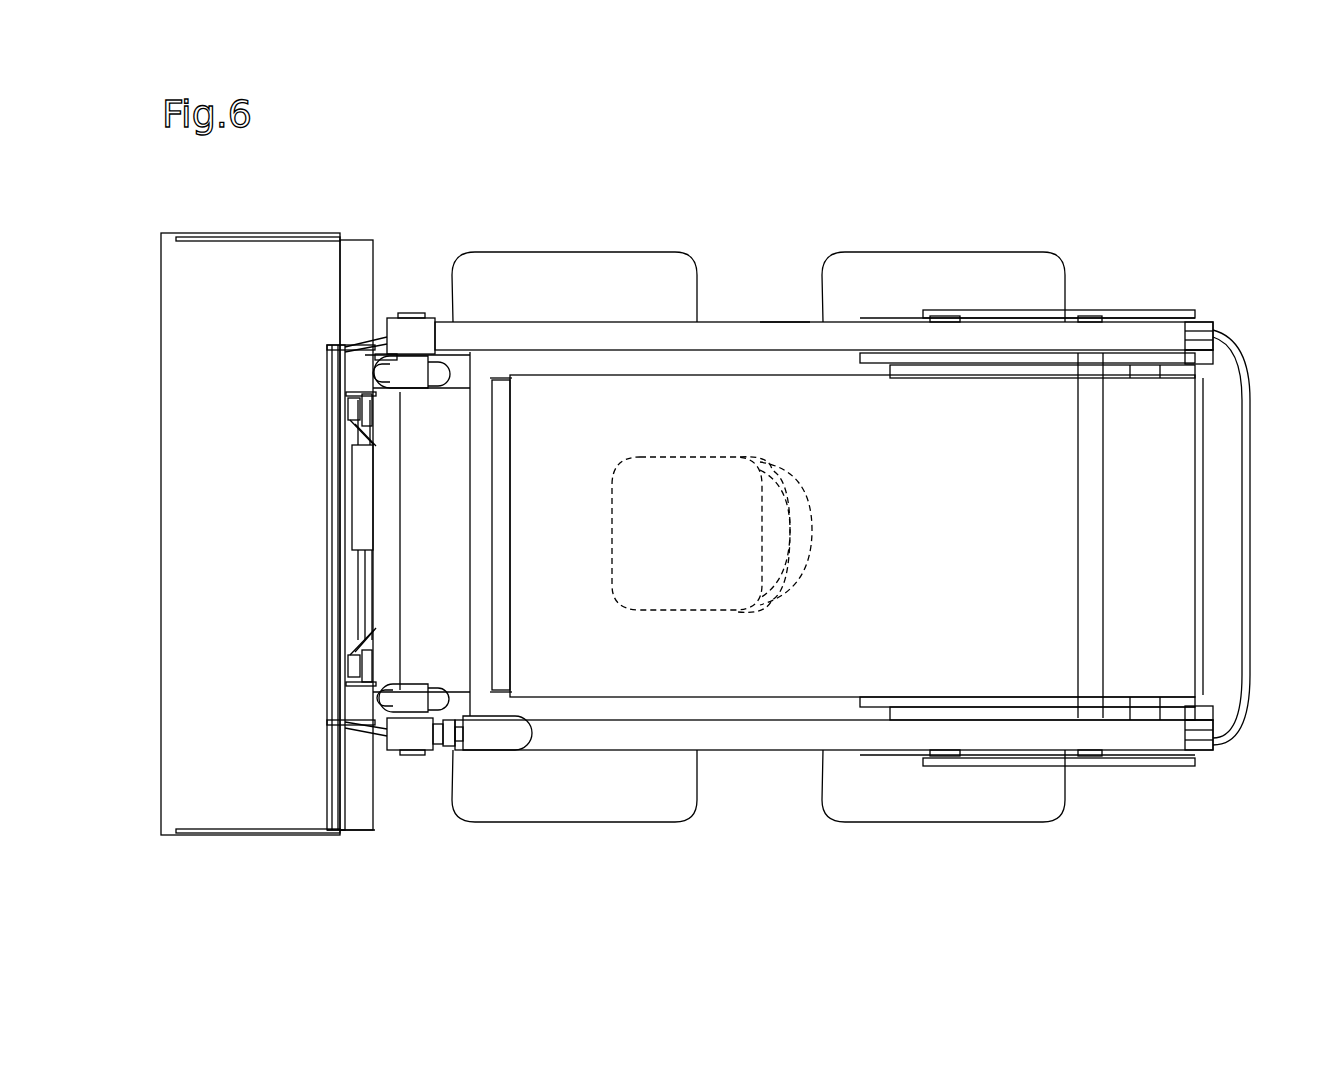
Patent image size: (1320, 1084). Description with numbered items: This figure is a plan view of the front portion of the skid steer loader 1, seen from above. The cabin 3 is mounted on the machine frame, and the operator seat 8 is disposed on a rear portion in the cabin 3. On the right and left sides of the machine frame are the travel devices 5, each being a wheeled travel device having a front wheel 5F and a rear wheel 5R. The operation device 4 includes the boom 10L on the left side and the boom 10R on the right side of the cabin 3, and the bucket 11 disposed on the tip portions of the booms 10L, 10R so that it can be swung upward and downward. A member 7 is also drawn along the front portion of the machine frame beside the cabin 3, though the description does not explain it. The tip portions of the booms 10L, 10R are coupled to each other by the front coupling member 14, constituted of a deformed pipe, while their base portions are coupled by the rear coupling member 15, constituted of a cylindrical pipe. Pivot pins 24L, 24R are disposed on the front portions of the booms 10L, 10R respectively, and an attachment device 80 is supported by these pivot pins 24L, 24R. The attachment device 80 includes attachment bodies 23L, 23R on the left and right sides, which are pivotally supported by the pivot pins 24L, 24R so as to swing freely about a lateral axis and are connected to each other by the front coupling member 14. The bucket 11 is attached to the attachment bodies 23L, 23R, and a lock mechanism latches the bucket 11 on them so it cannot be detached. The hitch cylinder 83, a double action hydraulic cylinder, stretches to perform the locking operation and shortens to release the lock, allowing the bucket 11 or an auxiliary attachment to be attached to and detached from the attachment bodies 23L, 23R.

The skid steer loader 1 is at (1025, 222).
The cabin 3 is at (778, 706).
The operation device 4 is at (785, 305).
The travel device 5 is at (492, 826).
The front wheel 5F is at (637, 252).
The rear wheel 5R is at (990, 252).
The front cross member 7 is at (470, 484).
The operator seat 8 is at (700, 457).
The boom 10R is at (737, 342).
The boom 10L is at (740, 755).
The bucket 11 is at (283, 232).
The front coupling member 14 is at (400, 563).
The rear coupling member 15 is at (1103, 545).
The attachment body 23R is at (360, 343).
The attachment body 23L is at (362, 733).
The pivot pin 24R is at (416, 318).
The pivot pin 24L is at (418, 756).
The attachment device 80 is at (326, 558).
The hitch cylinder 83 is at (362, 507).